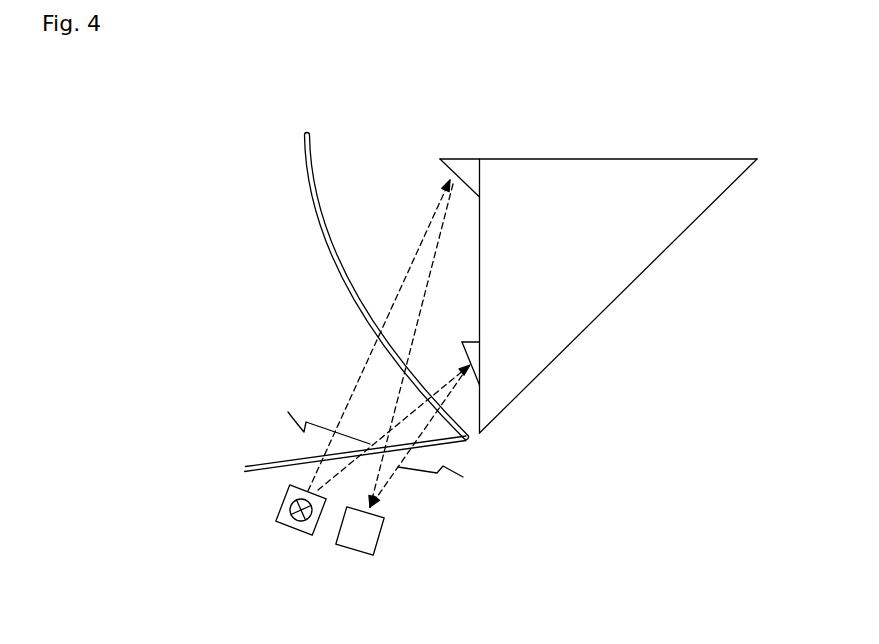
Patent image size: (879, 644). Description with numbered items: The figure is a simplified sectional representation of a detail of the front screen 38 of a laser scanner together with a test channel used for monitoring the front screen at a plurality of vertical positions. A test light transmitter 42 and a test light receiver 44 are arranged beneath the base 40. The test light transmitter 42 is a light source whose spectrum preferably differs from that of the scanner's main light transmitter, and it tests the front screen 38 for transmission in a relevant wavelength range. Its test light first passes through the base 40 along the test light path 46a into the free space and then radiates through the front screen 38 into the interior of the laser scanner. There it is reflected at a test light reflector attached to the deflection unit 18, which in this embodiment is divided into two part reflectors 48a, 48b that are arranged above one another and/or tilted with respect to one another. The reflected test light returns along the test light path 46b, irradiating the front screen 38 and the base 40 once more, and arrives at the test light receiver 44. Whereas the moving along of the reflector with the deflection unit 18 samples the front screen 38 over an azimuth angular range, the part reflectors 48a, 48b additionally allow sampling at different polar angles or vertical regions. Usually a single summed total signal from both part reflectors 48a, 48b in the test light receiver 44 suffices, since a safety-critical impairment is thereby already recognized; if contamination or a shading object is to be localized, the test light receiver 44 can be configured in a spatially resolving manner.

The deflection unit 18 is at (626, 271).
The front screen 38 is at (343, 286).
The base 40 is at (316, 448).
The test light transmitter 42 is at (270, 516).
The test light receiver 44 is at (367, 562).
The test light path 46a is at (360, 343).
The test light path 46b is at (401, 437).
The part reflector 48a is at (443, 153).
The part reflector 48b is at (506, 343).